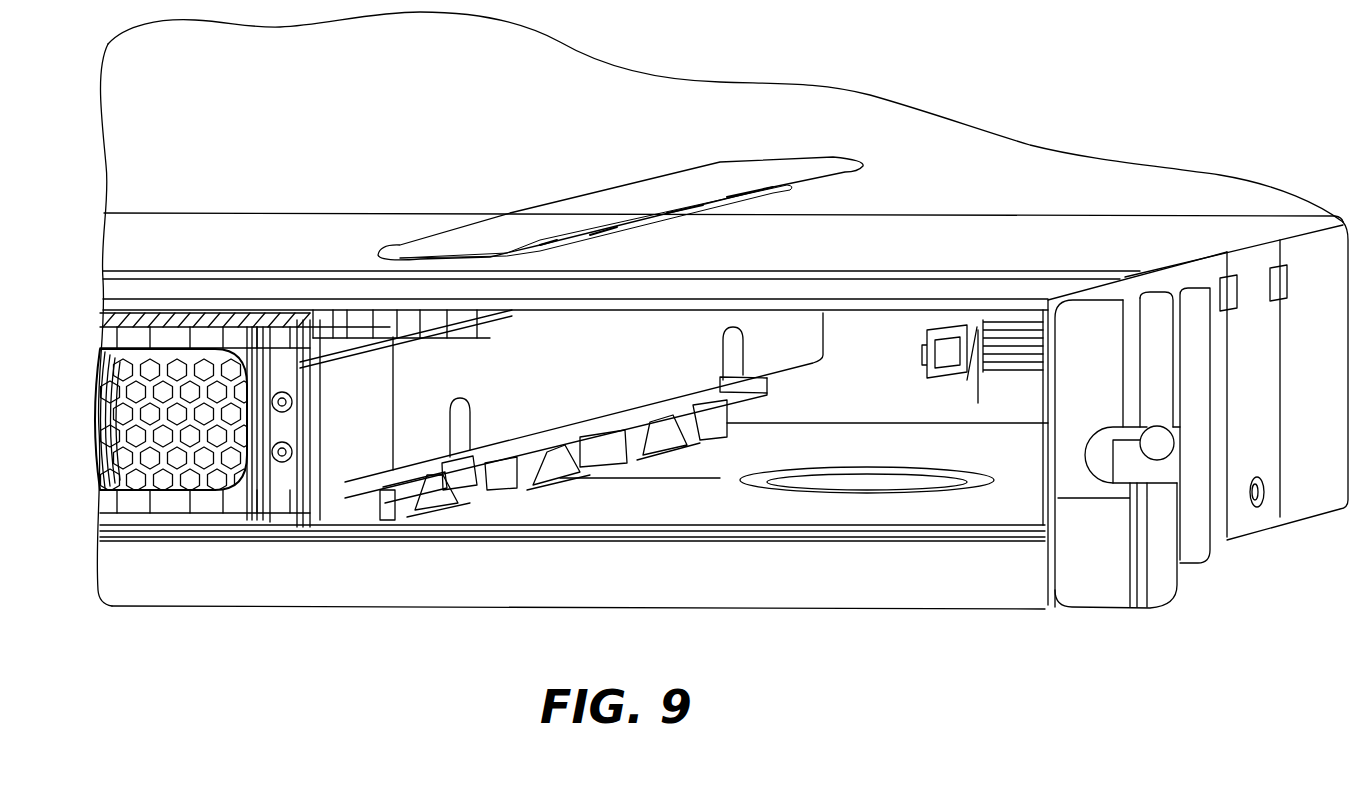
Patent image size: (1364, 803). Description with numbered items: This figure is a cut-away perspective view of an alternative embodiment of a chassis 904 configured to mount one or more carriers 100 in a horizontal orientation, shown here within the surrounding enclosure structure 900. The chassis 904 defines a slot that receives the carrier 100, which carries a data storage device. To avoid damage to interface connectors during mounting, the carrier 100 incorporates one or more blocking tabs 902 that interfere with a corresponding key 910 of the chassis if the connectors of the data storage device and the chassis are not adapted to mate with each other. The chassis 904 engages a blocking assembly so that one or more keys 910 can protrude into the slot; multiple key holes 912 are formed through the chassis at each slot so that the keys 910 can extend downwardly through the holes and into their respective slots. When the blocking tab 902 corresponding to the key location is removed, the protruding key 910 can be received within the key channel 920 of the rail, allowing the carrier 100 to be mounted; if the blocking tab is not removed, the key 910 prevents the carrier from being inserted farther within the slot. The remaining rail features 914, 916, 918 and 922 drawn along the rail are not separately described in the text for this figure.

The carrier 100 is at (170, 565).
The enclosure housing 900 is at (598, 115).
The blocking tab 902 is at (152, 312).
The chassis 904 is at (850, 360).
The key 910 is at (513, 312).
The key hole 912 is at (857, 453).
The mounting base 914 is at (437, 490).
The retention clip 916 is at (402, 490).
The latch tab 918 is at (593, 420).
The channel 920 is at (460, 468).
The spring clip 922 is at (490, 457).